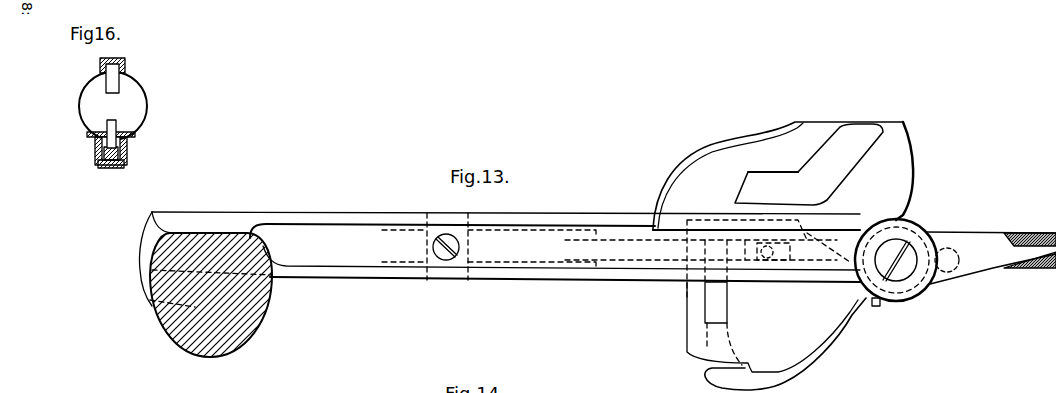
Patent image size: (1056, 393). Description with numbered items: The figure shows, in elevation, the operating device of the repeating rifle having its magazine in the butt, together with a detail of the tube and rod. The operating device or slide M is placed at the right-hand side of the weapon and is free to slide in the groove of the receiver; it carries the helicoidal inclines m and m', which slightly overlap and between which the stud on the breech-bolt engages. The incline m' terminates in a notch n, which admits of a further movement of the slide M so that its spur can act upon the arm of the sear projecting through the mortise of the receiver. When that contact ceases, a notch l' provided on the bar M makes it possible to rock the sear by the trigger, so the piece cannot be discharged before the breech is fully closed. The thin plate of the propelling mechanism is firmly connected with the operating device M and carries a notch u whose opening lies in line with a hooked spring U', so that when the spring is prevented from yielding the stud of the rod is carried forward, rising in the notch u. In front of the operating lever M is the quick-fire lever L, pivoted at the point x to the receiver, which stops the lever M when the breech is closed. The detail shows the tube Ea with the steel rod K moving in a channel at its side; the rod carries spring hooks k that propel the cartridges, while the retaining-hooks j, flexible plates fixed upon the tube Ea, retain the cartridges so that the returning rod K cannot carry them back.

In FIG. 16, the tube Ea is at (140, 102).
In FIG. 16, the retaining-hooks j is at (105, 86).
In FIG. 16, the hooks k is at (104, 129).
In FIG. 16, the movable rod K is at (127, 145).
In FIG. 13, the operating device or slide M is at (506, 256).
In FIG. 13, the notch l' is at (206, 284).
In FIG. 13, the helicoidal incline m is at (783, 176).
In FIG. 13, the helicoidal incline m' is at (809, 164).
In FIG. 13, the notch n is at (773, 185).
In FIG. 13, the pivot x is at (907, 260).
In FIG. 13, the quick-fire lever L is at (991, 258).
In FIG. 13, the trigger body V is at (783, 327).
In FIG. 13, the notch u is at (723, 323).
In FIG. 13, the hooked spring U' is at (785, 345).